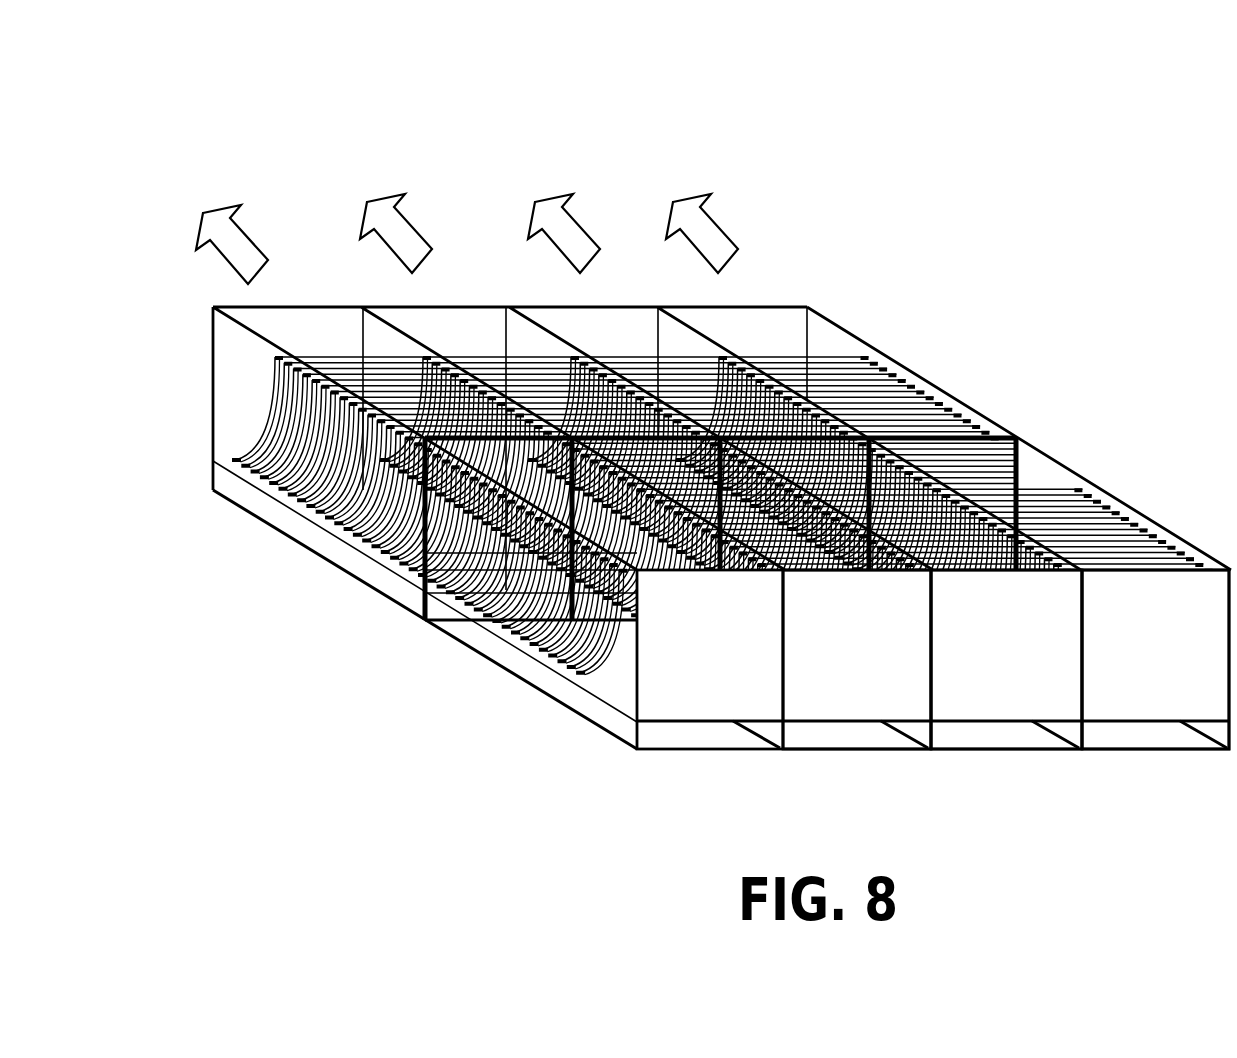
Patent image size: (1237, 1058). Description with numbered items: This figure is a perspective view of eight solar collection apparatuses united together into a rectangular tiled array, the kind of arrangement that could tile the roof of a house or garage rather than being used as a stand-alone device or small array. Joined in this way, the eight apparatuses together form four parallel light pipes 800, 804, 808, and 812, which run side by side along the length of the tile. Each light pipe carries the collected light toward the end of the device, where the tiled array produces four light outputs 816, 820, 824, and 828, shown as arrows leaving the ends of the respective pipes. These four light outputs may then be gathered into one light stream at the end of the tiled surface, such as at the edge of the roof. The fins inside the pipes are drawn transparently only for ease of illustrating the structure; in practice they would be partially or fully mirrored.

The light pipe 800 is at (704, 549).
The light pipe 804 is at (800, 706).
The light pipe 808 is at (972, 707).
The light pipe 812 is at (1130, 709).
The light output 816 is at (262, 155).
The light output 820 is at (433, 149).
The light output 824 is at (600, 149).
The light output 828 is at (758, 149).